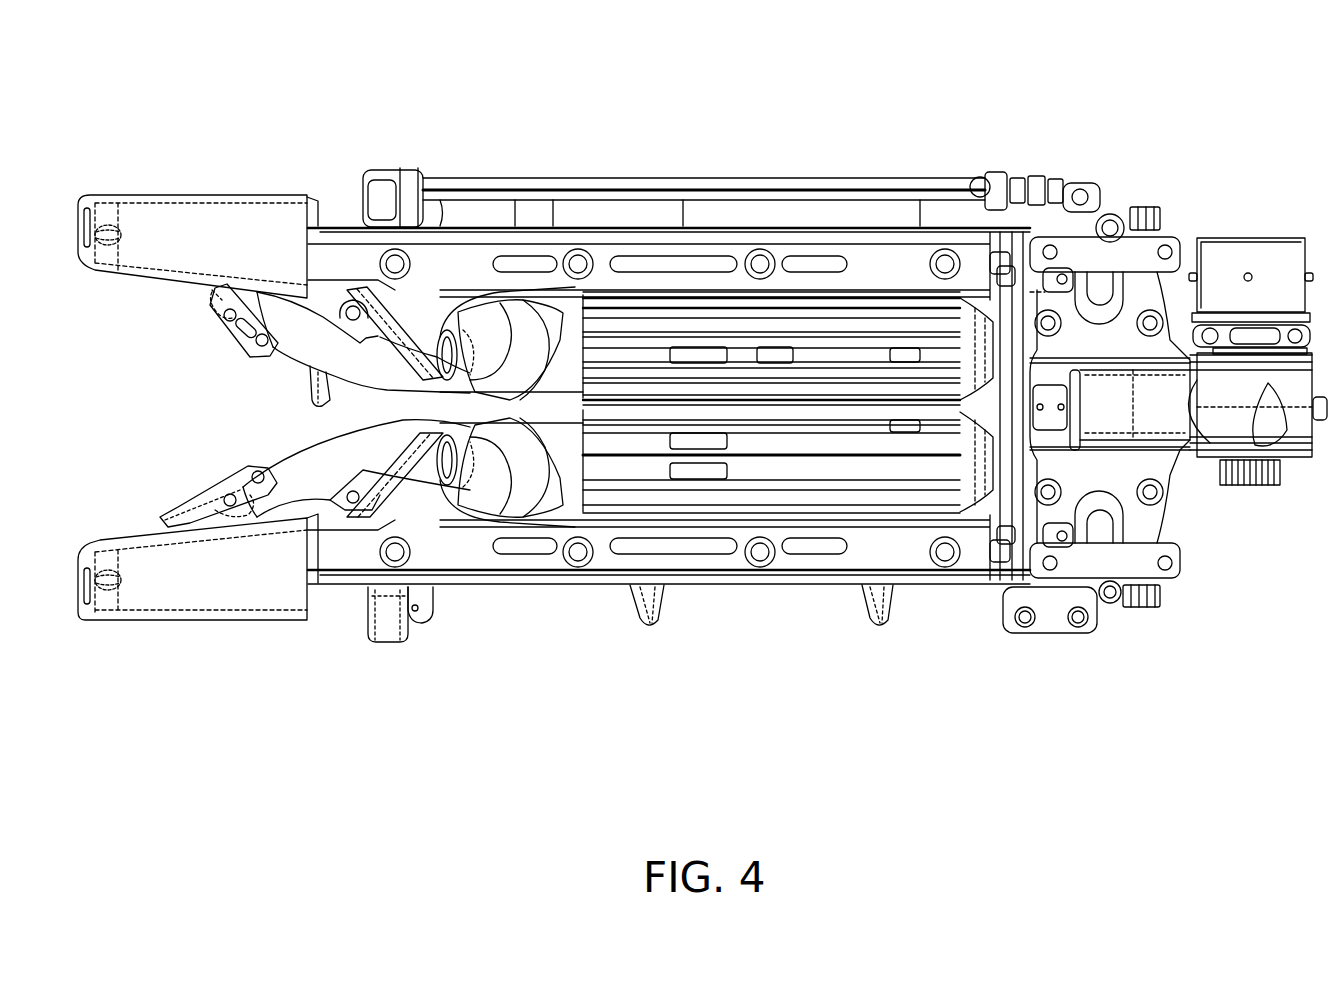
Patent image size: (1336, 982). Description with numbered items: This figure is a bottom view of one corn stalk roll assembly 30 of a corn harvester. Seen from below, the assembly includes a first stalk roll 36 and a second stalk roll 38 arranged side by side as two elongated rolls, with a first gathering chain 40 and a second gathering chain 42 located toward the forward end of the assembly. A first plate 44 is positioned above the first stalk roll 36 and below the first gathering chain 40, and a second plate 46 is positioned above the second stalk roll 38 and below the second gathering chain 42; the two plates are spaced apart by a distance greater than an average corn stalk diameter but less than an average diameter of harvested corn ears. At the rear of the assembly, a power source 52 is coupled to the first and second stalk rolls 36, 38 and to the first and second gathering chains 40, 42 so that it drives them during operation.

The stalk roll assembly 30 is at (868, 78).
The first stalk roll 36 is at (620, 325).
The second stalk roll 38 is at (783, 467).
The first gathering chain 40 is at (208, 313).
The second gathering chain 42 is at (238, 472).
The first plate 44 is at (300, 337).
The second plate 46 is at (318, 458).
The power source 52 is at (1240, 252).